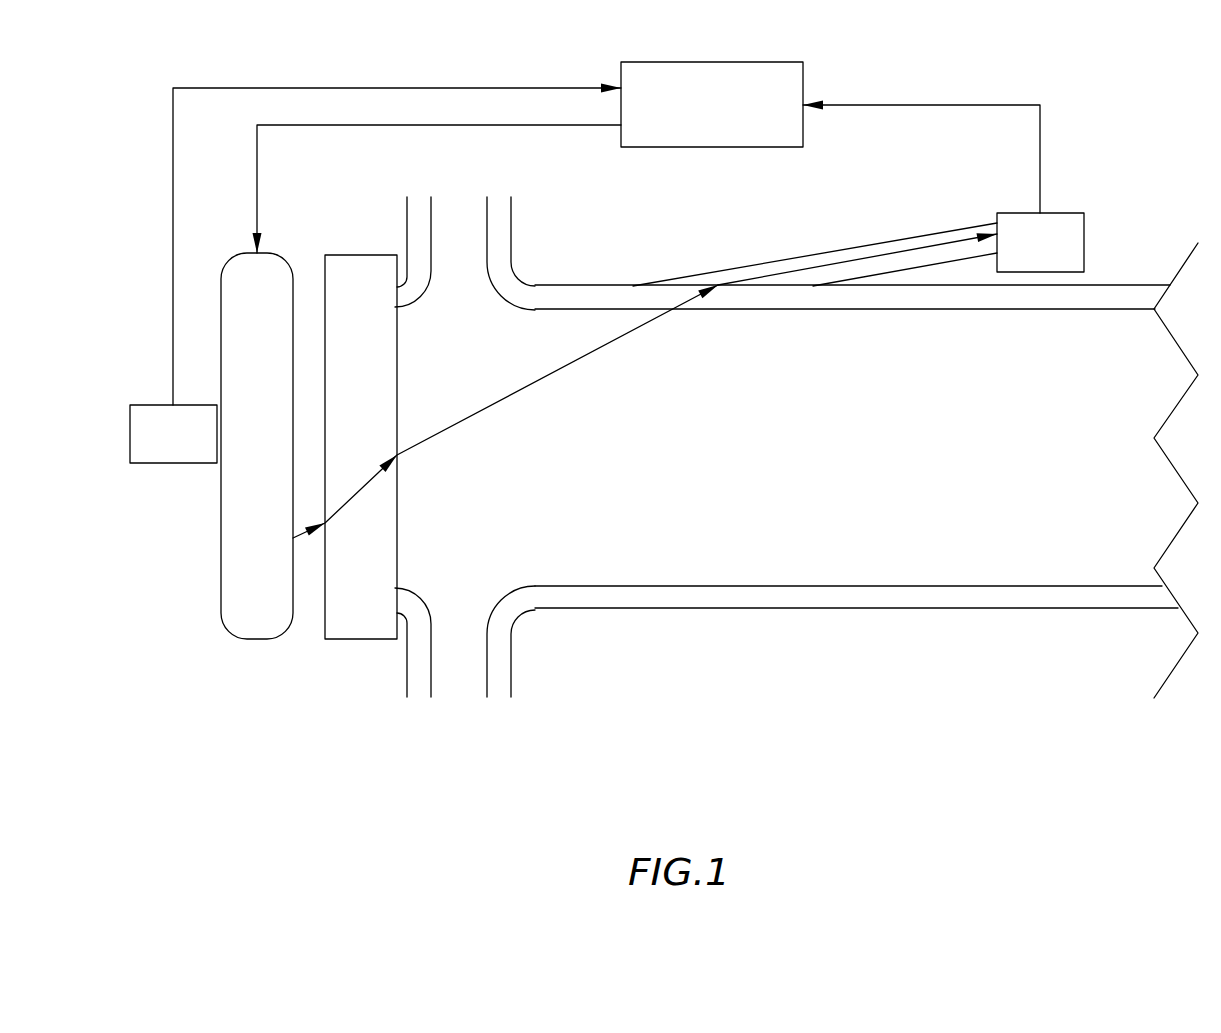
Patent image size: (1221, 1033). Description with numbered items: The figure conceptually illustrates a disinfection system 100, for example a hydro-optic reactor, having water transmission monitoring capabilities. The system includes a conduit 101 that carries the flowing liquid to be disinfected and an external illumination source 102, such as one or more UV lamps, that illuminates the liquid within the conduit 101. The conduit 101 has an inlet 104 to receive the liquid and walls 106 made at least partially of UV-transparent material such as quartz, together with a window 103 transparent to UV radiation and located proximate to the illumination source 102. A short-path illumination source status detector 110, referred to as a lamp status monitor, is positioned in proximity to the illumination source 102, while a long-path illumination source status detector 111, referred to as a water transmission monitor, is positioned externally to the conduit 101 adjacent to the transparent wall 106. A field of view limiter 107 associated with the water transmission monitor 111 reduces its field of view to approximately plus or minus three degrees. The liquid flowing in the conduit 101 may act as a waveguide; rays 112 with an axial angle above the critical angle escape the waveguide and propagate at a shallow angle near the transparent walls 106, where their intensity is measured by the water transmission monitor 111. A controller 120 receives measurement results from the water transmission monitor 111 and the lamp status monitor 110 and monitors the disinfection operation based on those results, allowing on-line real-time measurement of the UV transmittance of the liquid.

The disinfection system 100 is at (568, 730).
The conduit 101 is at (875, 542).
The illumination source 102 is at (221, 597).
The window 103 is at (363, 255).
The inlet 104 is at (456, 243).
The walls 106 is at (750, 584).
The field of view limiter 107 is at (782, 258).
The short-path illumination source status detector 110 is at (170, 465).
The long-path illumination source status detector 111 is at (1057, 213).
The rays 112 is at (533, 380).
The controller 120 is at (712, 62).